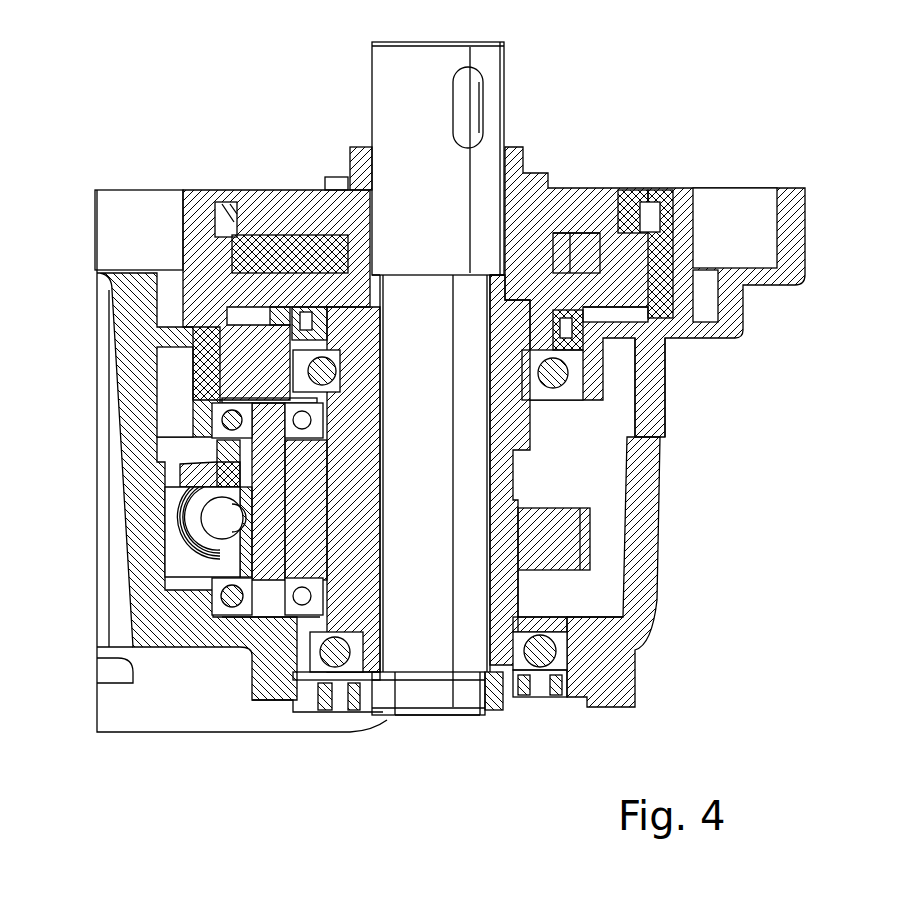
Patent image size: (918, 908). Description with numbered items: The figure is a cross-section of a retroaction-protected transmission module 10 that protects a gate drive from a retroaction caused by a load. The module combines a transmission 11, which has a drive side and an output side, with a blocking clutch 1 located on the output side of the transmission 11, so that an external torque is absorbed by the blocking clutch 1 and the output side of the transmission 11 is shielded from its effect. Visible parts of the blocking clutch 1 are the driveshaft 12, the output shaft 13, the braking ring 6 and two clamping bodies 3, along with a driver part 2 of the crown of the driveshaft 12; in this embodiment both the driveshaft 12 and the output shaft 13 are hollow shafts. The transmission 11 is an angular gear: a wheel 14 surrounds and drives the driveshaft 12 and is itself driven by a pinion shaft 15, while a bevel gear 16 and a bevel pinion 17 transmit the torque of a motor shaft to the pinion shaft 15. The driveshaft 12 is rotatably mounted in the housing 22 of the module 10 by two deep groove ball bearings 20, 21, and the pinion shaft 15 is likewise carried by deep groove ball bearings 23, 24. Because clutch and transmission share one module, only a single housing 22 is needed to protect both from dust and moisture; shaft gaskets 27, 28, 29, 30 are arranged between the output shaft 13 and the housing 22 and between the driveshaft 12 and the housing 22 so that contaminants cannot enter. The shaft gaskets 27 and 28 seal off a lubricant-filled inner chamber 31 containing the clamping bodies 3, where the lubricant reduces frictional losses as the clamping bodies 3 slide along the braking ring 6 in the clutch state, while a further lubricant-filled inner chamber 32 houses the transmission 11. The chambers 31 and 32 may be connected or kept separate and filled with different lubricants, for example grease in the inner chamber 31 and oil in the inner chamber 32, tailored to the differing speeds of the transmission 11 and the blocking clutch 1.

The blocking clutch 1 is at (537, 171).
The driver part 2 is at (607, 248).
The clamping bodies 3 is at (298, 248).
The braking ring 6 is at (205, 252).
The transmission module 10 is at (197, 737).
The transmission 11 is at (160, 458).
The driveshaft 12 is at (503, 480).
The output shaft 13 is at (373, 150).
The wheel 14 is at (570, 520).
The pinion shaft 15 is at (263, 605).
The bevel gear 16 is at (190, 473).
The bevel pinion 17 is at (213, 517).
The deep groove ball bearing 20 is at (583, 378).
The deep groove ball bearing 21 is at (560, 655).
The housing 22 is at (657, 547).
The deep groove ball bearing 23 is at (210, 600).
The deep groove ball bearing 24 is at (213, 417).
The shaft gasket 27 is at (628, 210).
The shaft gasket 28 is at (620, 345).
The shaft gasket 29 is at (552, 700).
The shaft gasket 30 is at (492, 707).
The inner chamber 31 is at (583, 262).
The inner chamber 32 is at (583, 597).